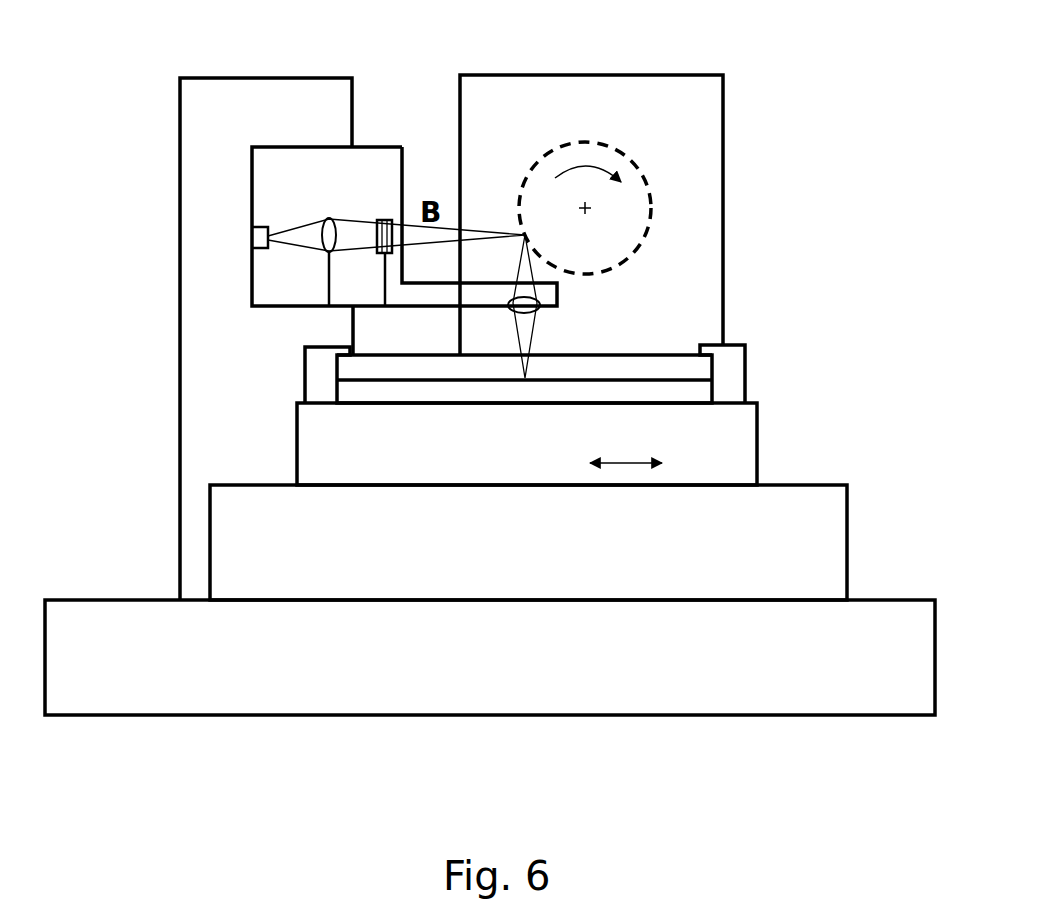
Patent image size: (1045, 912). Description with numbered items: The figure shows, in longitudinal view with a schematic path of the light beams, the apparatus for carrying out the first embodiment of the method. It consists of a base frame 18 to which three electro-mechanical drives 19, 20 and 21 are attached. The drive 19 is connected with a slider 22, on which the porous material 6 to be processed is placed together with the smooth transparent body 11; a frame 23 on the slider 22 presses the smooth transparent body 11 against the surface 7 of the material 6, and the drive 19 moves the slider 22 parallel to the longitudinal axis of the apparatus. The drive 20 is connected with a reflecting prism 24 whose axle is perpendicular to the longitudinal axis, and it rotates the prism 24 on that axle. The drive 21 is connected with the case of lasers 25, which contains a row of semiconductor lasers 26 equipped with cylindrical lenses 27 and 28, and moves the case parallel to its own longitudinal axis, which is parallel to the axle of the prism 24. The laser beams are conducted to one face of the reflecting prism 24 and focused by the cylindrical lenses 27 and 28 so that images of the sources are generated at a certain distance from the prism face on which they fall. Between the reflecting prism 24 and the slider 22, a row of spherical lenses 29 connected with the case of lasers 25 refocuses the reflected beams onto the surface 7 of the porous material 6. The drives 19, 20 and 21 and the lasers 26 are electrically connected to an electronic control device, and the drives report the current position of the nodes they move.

The porous material 6 is at (524, 411).
The surface of the material 7 is at (524, 417).
The smooth transparent body 11 is at (524, 398).
The base frame 18 is at (490, 722).
The electro-mechanical drive 19 is at (528, 644).
The electro-mechanical drive 20 is at (574, 180).
The electro-mechanical drive 21 is at (245, 302).
The slider 22 is at (556, 587).
The frame 23 is at (555, 375).
The reflecting prism 24 is at (690, 208).
The case of lasers 25 is at (342, 271).
The semiconductor lasers 26 is at (327, 272).
The cylindrical lens 27 is at (290, 167).
The cylindrical lens 28 is at (350, 164).
The spherical lenses 29 is at (546, 306).